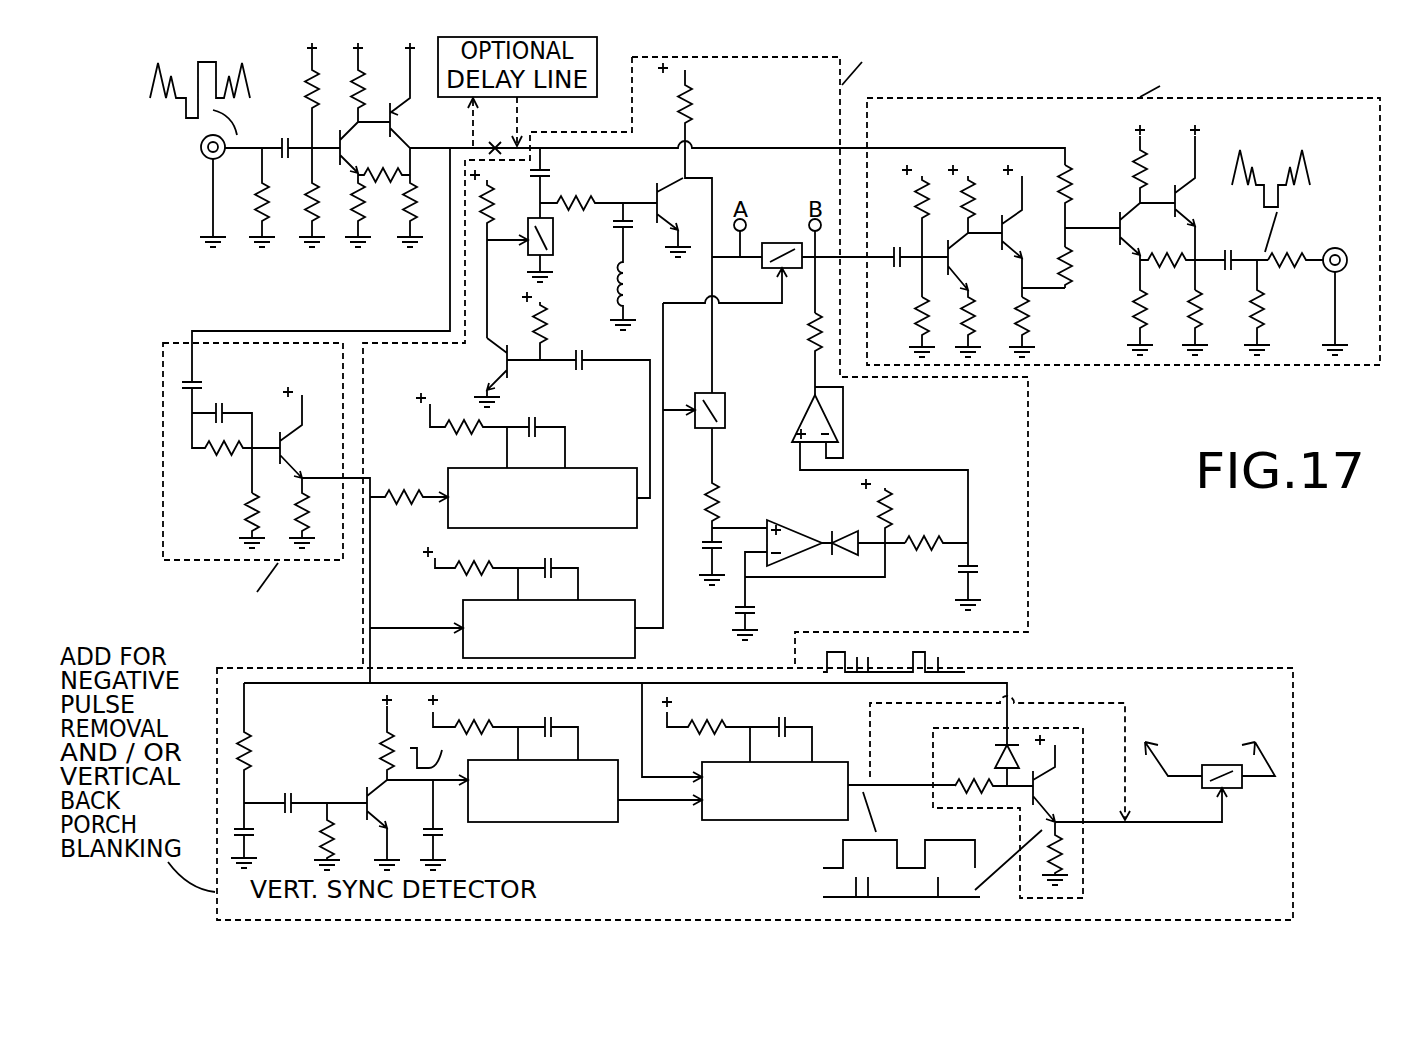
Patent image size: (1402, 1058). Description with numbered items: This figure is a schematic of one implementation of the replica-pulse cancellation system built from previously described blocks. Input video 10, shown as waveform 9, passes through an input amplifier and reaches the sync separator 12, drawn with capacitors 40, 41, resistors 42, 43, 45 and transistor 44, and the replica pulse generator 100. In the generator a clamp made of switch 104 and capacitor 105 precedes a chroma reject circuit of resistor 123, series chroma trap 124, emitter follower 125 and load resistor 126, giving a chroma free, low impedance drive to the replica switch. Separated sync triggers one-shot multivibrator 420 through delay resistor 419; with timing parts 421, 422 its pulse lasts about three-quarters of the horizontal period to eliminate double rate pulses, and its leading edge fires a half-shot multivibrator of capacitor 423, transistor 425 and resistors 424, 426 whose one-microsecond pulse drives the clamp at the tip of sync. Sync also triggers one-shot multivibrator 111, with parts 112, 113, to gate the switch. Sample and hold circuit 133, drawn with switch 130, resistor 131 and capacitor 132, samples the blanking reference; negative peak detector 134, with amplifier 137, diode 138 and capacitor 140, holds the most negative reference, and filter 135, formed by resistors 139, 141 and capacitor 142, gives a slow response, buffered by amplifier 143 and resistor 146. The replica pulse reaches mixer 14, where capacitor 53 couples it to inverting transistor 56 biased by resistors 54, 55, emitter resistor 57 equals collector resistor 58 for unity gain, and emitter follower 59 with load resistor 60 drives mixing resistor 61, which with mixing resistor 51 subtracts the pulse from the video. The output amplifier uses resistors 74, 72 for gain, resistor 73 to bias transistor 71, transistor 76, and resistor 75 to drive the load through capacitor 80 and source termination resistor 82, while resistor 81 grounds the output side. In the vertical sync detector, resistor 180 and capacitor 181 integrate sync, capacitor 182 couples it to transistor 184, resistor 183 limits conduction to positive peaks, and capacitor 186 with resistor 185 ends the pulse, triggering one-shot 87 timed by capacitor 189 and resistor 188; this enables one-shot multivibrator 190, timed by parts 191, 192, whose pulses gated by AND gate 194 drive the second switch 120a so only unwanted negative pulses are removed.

The composite video input waveform 9 is at (210, 64).
The video 10 is at (255, 78).
The sync separator 12 is at (287, 377).
The mixer 14 is at (991, 137).
The capacitor 40 is at (206, 385).
The capacitor 41 is at (226, 438).
The resistor 42 is at (236, 449).
The resistor 43 is at (237, 520).
The transistor 44 is at (302, 432).
The resistor 45 is at (317, 513).
The mixing resistor 51 is at (1089, 206).
The capacitor 53 is at (912, 242).
The resistor 54 is at (903, 231).
The resistor 55 is at (906, 327).
The inverting transistor 56 is at (969, 261).
The emitter resistor 57 is at (982, 323).
The collector resistor 58 is at (979, 199).
The emitter follower 59 is at (1033, 231).
The load resistor 60 is at (1035, 327).
The mixing resistor 61 is at (1081, 267).
The transistor 71 is at (1140, 231).
The resistor 72 is at (1126, 307).
The resistor 73 is at (1155, 164).
The resistor 74 is at (1182, 275).
The resistor 75 is at (1185, 322).
The transistor 76 is at (1195, 207).
The capacitor 80 is at (1243, 248).
The resistor 81 is at (1247, 307).
The source termination resistor 82 is at (1295, 276).
The 700 microsecond one shot 87 is at (568, 828).
The replica pulse generator 100 is at (803, 111).
The switch 104 is at (563, 250).
The capacitor 105 is at (559, 183).
The one-shot multivibrator 111 is at (455, 612).
The timing resistor 112 is at (484, 567).
The timing capacitor 113 is at (572, 571).
The second switch 120a is at (1206, 748).
The resistor 123 is at (598, 192).
The series chroma trap 124 is at (635, 245).
The emitter follower 125 is at (682, 217).
The load resistor 126 is at (699, 228).
The sampling switch 130 is at (711, 394).
The resistor 131 is at (736, 485).
The capacitor 132 is at (694, 552).
The sample and hold circuit 133 is at (715, 472).
The negative peak detector 134 is at (797, 566).
The filter 135 is at (938, 544).
The operational amplifier 137 is at (795, 529).
The diode 138 is at (863, 528).
The resistor 139 is at (901, 511).
The capacitor 140 is at (844, 615).
The resistor 141 is at (936, 529).
The capacitor 142 is at (985, 576).
The buffer amplifier 143 is at (865, 465).
The resistor 146 is at (792, 354).
The resistor 180 is at (269, 756).
The capacitor 181 is at (265, 848).
The capacitor 182 is at (305, 791).
The resistor 183 is at (349, 836).
The transistor 184 is at (391, 825).
The resistor 185 is at (402, 740).
The capacitor 186 is at (454, 825).
The resistor 188 is at (486, 727).
The capacitor 189 is at (572, 727).
The one-shot multivibrator 190 is at (765, 827).
The timing resistor 191 is at (720, 728).
The timing capacitor 192 is at (807, 732).
The AND gate 194 is at (1092, 858).
The delay resistor 419 is at (409, 514).
The one-shot multivibrator 420 is at (445, 487).
The timing resistor 421 is at (472, 430).
The timing capacitor 422 is at (561, 437).
The capacitor 423 is at (578, 424).
The resistor 424 is at (558, 326).
The transistor 425 is at (482, 372).
The resistor 426 is at (503, 227).